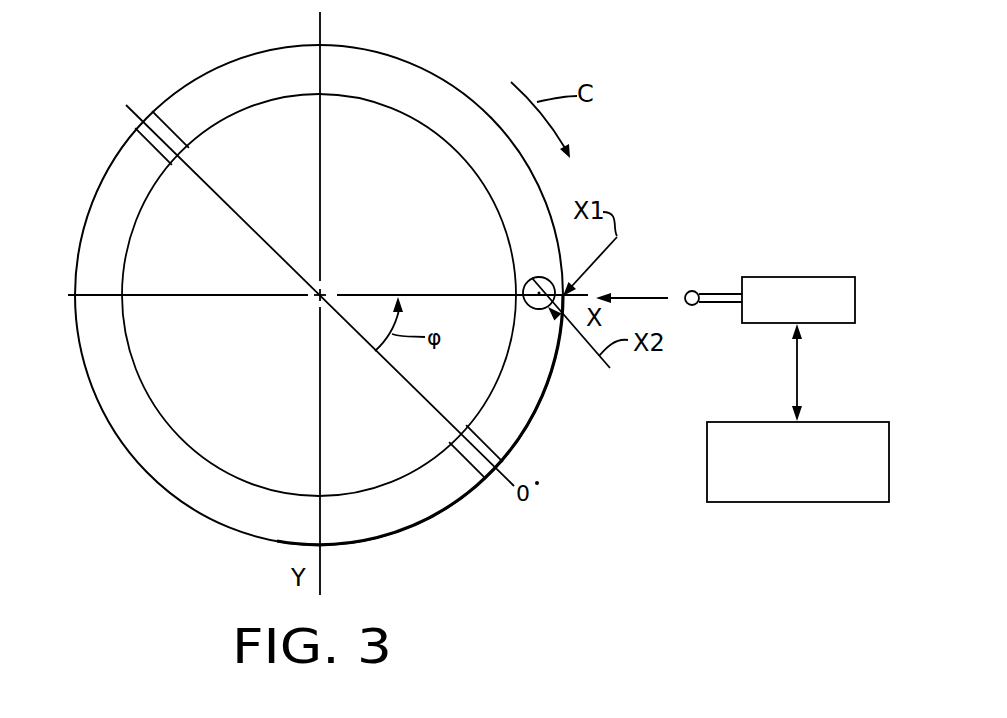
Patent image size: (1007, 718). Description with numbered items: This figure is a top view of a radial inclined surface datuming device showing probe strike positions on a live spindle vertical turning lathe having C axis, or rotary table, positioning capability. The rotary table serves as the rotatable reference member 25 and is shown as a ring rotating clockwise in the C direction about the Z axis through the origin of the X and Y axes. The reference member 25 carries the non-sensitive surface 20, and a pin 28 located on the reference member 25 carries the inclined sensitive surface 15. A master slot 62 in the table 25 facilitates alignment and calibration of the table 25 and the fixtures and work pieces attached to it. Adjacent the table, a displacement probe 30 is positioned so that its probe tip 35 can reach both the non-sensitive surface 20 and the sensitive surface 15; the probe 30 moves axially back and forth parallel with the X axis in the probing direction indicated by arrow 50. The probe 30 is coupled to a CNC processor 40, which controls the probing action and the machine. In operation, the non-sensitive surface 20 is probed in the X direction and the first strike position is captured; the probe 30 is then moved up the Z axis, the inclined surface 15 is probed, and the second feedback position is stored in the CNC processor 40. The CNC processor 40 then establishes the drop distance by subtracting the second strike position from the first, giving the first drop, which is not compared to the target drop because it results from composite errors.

The sensitive surface 15 is at (537, 277).
The non-sensitive surface 20 is at (550, 381).
The rotatable reference member 25 is at (398, 534).
The pin 28 is at (522, 289).
The displacement probe 30 is at (846, 277).
The probe tip 35 is at (699, 293).
The CNC processor 40 is at (876, 421).
The arrow 50 is at (640, 298).
The master slot 62 is at (145, 147).